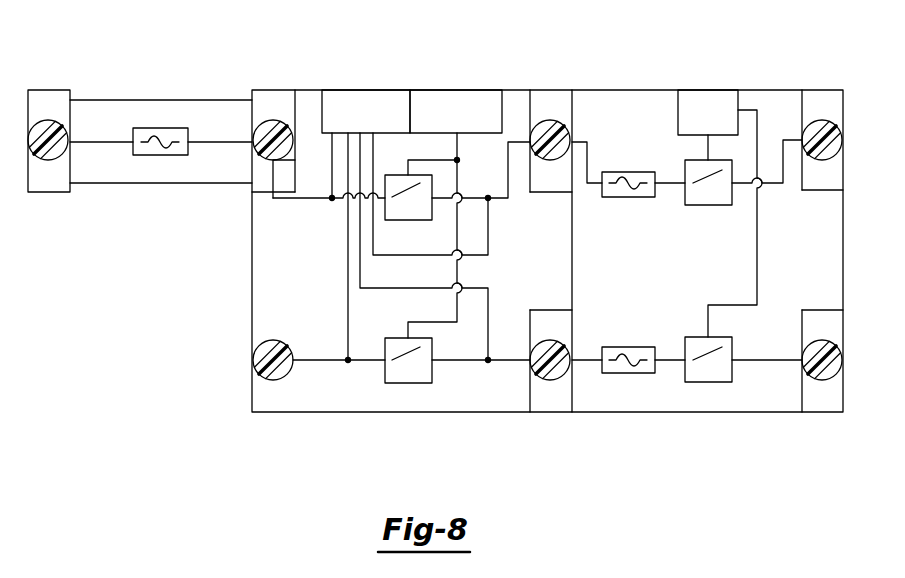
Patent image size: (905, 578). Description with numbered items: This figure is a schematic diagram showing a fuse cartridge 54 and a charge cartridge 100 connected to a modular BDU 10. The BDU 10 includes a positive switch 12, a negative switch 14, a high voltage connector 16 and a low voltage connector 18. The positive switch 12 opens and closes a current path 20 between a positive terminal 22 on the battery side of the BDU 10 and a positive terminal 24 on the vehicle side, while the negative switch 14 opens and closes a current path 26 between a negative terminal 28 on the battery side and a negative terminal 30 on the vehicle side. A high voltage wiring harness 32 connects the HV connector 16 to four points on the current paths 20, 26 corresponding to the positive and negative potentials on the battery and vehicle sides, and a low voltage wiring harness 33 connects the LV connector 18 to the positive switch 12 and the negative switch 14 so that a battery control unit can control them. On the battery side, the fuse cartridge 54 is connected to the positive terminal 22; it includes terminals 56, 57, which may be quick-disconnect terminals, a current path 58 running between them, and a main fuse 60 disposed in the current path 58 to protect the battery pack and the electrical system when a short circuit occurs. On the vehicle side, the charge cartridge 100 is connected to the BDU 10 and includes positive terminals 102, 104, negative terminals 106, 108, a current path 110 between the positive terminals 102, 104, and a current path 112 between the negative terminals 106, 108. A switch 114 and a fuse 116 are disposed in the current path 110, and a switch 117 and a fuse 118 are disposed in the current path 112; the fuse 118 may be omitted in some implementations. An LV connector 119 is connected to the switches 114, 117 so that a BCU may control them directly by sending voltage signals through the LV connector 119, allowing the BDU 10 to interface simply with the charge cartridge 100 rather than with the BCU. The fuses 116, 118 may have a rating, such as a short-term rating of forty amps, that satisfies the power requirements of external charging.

The modular BDU 10 is at (437, 82).
The positive switch 12 is at (403, 176).
The negative switch 14 is at (412, 383).
The high voltage (HV) connector 16 is at (322, 102).
The low voltage (LV) connector 18 is at (502, 103).
The current path 20 is at (270, 183).
The positive terminal 22 is at (263, 133).
The positive terminal 24 is at (562, 130).
The current path 26 is at (307, 360).
The negative terminal 28 is at (263, 360).
The negative terminal 30 is at (530, 365).
The high voltage (HV) wiring harness 32 is at (326, 144).
The low voltage (LV) wiring harness 33 is at (476, 150).
The fuse cartridge 54 is at (149, 133).
The terminal 56 is at (48, 157).
The terminal 57 is at (283, 160).
The current path 58 is at (88, 142).
The main fuse 60 is at (157, 128).
The charge cartridge 100 is at (790, 82).
The positive terminal 102 is at (550, 160).
The positive terminal 104 is at (822, 160).
The negative terminal 106 is at (570, 370).
The negative terminal 108 is at (804, 367).
The current path 110 is at (587, 145).
The current path 112 is at (578, 360).
The switch 114 is at (685, 165).
The fuse 116 is at (628, 197).
The switch 117 is at (705, 382).
The fuse 118 is at (627, 347).
The LV connector 119 is at (707, 90).